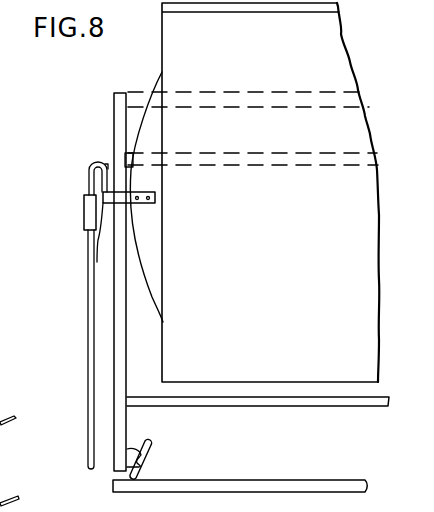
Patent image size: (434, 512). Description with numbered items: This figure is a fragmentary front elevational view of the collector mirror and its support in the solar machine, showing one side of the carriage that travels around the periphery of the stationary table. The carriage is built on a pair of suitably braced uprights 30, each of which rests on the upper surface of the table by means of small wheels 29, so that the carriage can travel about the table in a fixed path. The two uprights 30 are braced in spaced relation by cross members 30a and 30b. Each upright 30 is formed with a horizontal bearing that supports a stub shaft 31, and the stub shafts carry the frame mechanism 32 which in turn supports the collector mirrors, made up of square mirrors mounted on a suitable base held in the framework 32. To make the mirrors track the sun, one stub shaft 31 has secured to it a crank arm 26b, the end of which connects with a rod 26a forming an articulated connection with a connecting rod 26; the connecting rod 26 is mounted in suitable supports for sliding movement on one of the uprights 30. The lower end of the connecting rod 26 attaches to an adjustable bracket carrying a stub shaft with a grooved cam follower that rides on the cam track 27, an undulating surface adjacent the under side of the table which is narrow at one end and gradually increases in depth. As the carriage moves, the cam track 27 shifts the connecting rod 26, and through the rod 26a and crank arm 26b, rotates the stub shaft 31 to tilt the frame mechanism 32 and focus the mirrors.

The connecting rod 26 is at (88, 404).
The rod 26a is at (86, 193).
The crank arm 26b is at (88, 182).
The cam track 27 is at (283, 478).
The small wheels 29 is at (146, 454).
The upright 30 is at (114, 340).
The cross member 30a is at (135, 94).
The cross member 30b is at (125, 155).
The stub shaft 31 is at (97, 233).
The frame mechanism 32 is at (150, 307).